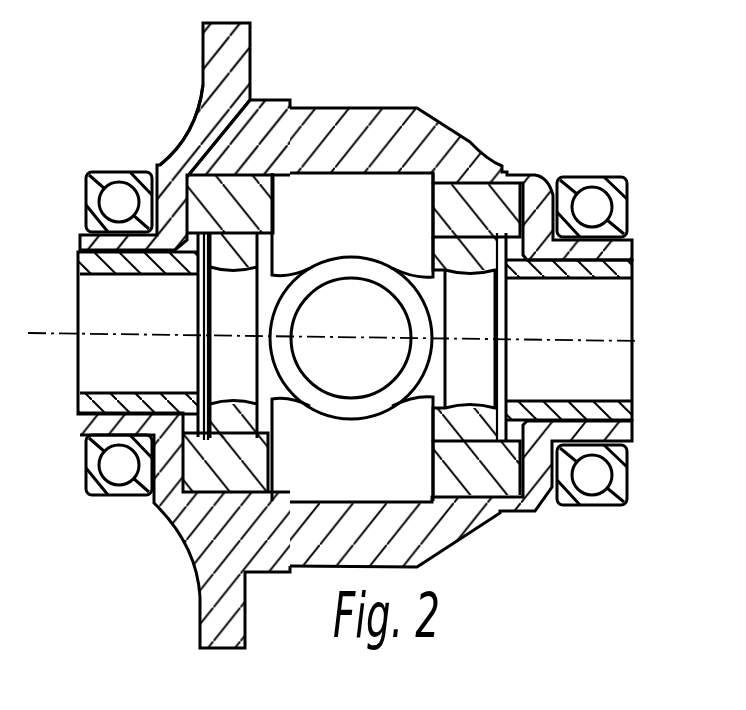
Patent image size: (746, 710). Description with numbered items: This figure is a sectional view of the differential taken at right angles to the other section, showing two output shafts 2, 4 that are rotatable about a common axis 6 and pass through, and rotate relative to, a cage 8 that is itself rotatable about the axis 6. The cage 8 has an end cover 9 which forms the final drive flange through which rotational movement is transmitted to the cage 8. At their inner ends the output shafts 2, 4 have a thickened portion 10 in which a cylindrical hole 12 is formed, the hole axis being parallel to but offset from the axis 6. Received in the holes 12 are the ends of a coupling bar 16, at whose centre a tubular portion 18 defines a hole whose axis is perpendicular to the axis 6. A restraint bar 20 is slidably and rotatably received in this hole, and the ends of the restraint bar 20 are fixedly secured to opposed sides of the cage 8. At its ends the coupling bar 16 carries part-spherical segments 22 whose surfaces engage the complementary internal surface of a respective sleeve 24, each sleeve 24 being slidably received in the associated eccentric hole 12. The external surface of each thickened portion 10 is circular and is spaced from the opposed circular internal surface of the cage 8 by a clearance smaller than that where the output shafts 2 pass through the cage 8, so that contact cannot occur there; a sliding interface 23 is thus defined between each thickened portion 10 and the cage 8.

The output shaft 2 is at (617, 268).
The output shaft 4 is at (93, 258).
The axis 6 is at (641, 341).
The cage 8 is at (452, 157).
The end cover 9 is at (232, 78).
The thickened portion 10 is at (483, 210).
The cylindrical hole 12 is at (442, 255).
The coupling bar 16 is at (428, 370).
The tubular portion 18 is at (377, 397).
The restraint bar 20 is at (358, 369).
The part-spherical segment 22 is at (272, 400).
The sliding interface 23 is at (225, 158).
The sleeve 24 is at (475, 440).